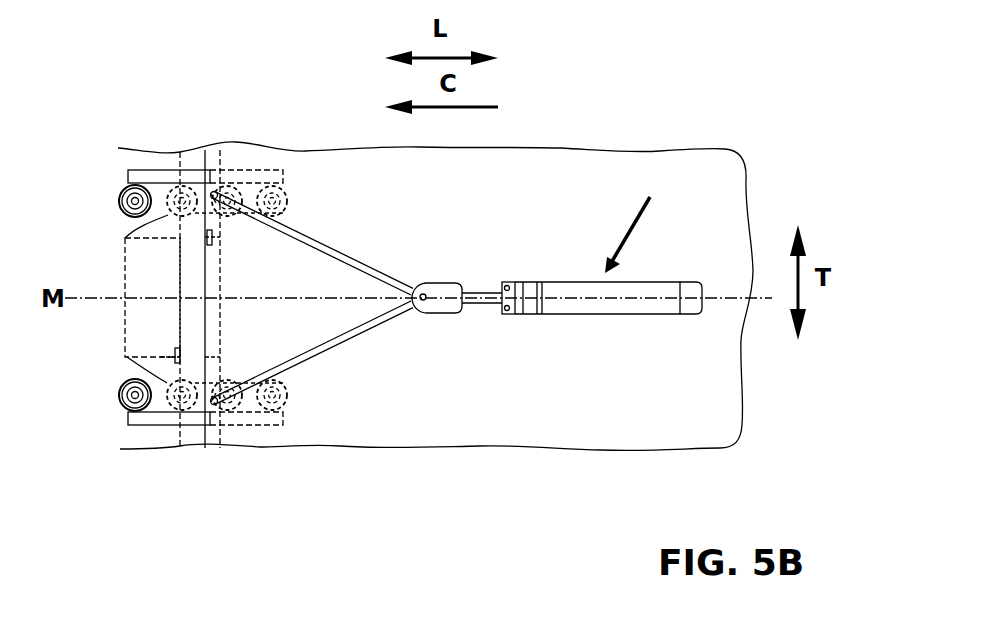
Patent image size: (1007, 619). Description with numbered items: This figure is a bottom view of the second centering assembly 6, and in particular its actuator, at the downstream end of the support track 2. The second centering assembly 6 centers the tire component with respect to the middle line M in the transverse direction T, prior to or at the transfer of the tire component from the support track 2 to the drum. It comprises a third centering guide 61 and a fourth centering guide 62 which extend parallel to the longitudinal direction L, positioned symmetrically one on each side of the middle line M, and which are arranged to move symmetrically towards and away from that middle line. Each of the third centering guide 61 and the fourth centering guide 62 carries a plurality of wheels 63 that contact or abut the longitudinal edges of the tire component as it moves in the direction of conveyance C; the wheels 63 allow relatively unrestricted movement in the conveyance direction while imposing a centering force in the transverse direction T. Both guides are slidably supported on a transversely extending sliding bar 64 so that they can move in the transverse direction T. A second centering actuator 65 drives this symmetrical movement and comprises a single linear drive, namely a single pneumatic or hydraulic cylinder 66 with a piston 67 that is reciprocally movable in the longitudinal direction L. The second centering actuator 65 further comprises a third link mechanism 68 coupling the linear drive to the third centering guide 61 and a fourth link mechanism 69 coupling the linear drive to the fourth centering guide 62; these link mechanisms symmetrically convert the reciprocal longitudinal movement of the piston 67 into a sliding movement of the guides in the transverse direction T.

The support track 2 is at (642, 167).
The second centering assembly 6 is at (143, 172).
The third centering guide 61 is at (151, 418).
The fourth centering guide 62 is at (167, 170).
The wheels 63 is at (122, 219).
The sliding bar 64 is at (253, 170).
The second centering actuator 65 is at (640, 221).
The pneumatic or hydraulic cylinder 66 is at (600, 307).
The piston 67 is at (440, 306).
The third link mechanism 68 is at (323, 348).
The fourth link mechanism 69 is at (372, 272).